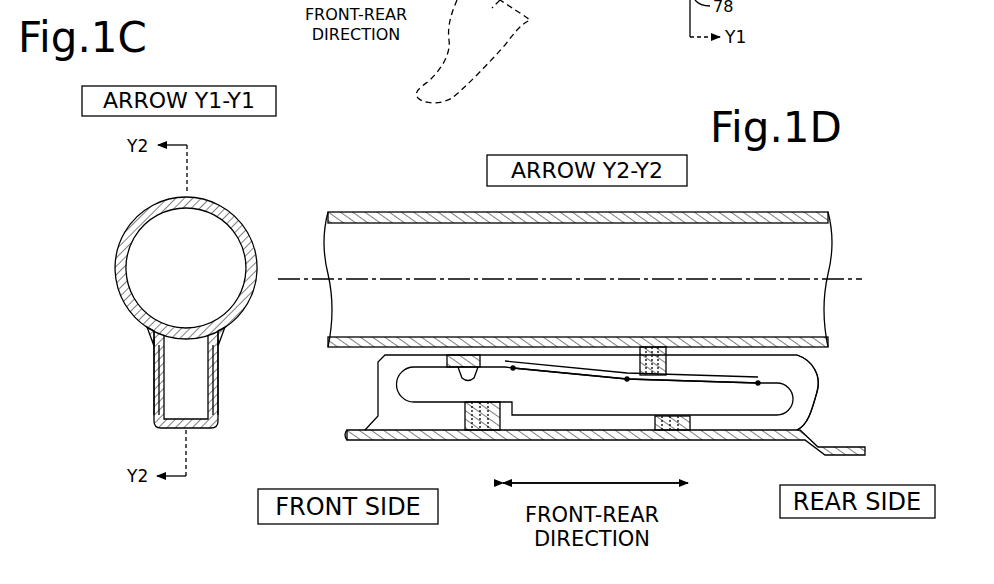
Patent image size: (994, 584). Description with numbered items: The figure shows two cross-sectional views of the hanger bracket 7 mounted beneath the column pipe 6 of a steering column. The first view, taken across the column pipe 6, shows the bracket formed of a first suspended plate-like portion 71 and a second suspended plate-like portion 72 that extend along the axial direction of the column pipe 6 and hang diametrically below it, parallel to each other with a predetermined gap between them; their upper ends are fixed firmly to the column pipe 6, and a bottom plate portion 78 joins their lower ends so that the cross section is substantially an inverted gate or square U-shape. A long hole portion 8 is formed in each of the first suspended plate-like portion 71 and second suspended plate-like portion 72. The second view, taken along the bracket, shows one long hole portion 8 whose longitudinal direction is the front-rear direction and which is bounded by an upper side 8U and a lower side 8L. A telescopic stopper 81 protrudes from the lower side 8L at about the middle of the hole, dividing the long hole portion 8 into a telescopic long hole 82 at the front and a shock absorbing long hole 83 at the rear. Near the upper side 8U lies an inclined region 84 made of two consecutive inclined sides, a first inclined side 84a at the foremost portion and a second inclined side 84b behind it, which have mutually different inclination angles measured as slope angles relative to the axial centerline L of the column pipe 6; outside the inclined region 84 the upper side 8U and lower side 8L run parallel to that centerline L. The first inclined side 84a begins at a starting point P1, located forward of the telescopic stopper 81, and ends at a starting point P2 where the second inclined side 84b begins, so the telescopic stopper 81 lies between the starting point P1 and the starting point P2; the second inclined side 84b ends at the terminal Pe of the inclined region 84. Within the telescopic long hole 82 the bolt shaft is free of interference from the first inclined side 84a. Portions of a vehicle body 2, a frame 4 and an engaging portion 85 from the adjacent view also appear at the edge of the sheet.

In FIG. 1C, the column pipe 6 is at (226, 213).
In FIG. 1D, the column pipe 6 is at (735, 212).
In FIG. 1C, the long hole portion 8 is at (153, 380).
In FIG. 1D, the long hole portion 8 is at (438, 386).
In FIG. 1D, the upper side 8U is at (485, 370).
In FIG. 1D, the lower side 8L is at (565, 445).
In FIG. 1C, the first suspended plate-like portion 71 is at (154, 350).
In FIG. 1C, the second suspended plate-like portion 72 is at (218, 350).
In FIG. 1D, the second suspended plate-like portion 72 is at (802, 362).
In FIG. 1C, the bottom plate portion 78 is at (200, 432).
In FIG. 1D, the bottom plate portion 78 is at (681, 442).
In FIG. 1D, the telescopic long hole 82 is at (453, 392).
In FIG. 1D, the shock absorbing long hole 83 is at (708, 418).
In FIG. 1D, the inclined region 84 is at (697, 337).
In FIG. 1D, the first inclined side 84a is at (574, 362).
In FIG. 1D, the second inclined side 84b is at (632, 376).
In FIG. 1D, the vehicle body 2 is at (565, 0).
In FIG. 1D, the frame 4 is at (643, 0).
In FIG. 1D, the hanger bracket 7 is at (685, 8).
In FIG. 1D, the telescopic stopper 81 is at (606, 0).
In FIG. 1D, the engaging portion 85 is at (622, 0).
In FIG. 1D, the axial centerline L is at (842, 279).
In FIG. 1D, the starting point P1 is at (509, 382).
In FIG. 1D, the starting point P2 is at (629, 390).
In FIG. 1D, the terminal Pe is at (761, 393).